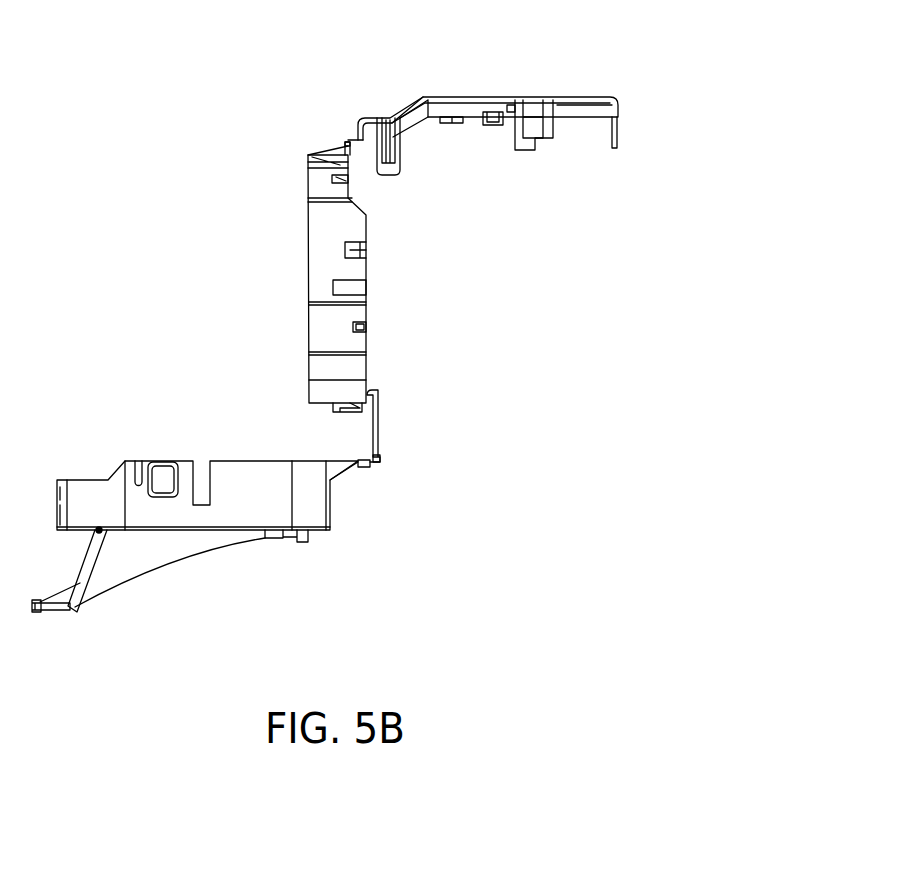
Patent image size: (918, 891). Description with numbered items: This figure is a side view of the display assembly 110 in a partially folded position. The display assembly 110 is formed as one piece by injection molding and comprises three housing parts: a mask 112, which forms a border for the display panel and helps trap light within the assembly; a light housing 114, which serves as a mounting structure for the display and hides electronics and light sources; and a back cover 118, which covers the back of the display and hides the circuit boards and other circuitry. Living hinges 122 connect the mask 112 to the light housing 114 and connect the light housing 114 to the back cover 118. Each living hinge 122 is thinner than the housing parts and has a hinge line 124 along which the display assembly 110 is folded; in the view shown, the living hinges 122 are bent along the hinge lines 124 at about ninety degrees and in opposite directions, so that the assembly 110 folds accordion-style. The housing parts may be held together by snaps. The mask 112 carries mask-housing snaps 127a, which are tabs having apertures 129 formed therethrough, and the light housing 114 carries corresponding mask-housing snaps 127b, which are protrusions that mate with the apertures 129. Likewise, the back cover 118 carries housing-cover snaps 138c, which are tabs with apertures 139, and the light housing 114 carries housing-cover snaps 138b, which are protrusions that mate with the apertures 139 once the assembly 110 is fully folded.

The display assembly 110 is at (470, 382).
The mask 112 is at (245, 447).
The light housing 114 is at (386, 290).
The back cover 118 is at (501, 78).
The living hinge 122 is at (336, 140).
The hinge line 124 is at (347, 140).
The mask-housing snap 127a is at (187, 466).
The mask-housing snap 127b is at (366, 250).
The aperture 129 is at (147, 470).
The housing-cover snap 138b is at (364, 330).
The housing-cover snap 138c is at (387, 177).
The aperture 139 is at (392, 157).